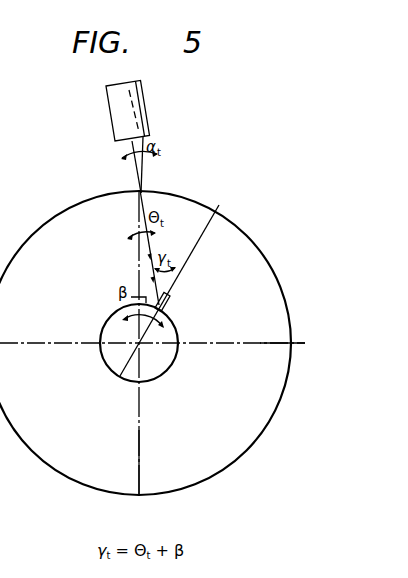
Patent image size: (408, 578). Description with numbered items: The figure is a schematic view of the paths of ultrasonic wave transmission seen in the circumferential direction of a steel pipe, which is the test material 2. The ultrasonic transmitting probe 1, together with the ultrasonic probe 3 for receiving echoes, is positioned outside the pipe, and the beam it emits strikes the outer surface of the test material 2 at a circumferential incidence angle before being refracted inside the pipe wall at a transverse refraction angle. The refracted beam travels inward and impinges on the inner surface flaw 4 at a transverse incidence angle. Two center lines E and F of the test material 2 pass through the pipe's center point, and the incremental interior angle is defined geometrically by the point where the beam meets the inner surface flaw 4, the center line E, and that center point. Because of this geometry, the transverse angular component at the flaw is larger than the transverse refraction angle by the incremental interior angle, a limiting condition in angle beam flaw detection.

The ultrasonic transmitting probe 1 is at (143, 100).
The ultrasonic probe for receiving echoes 3 is at (161, 196).
The test material 2 is at (267, 258).
The inner surface flaw 4 is at (172, 303).
The center line of the test material E is at (139, 495).
The center line of the test material F is at (303, 343).